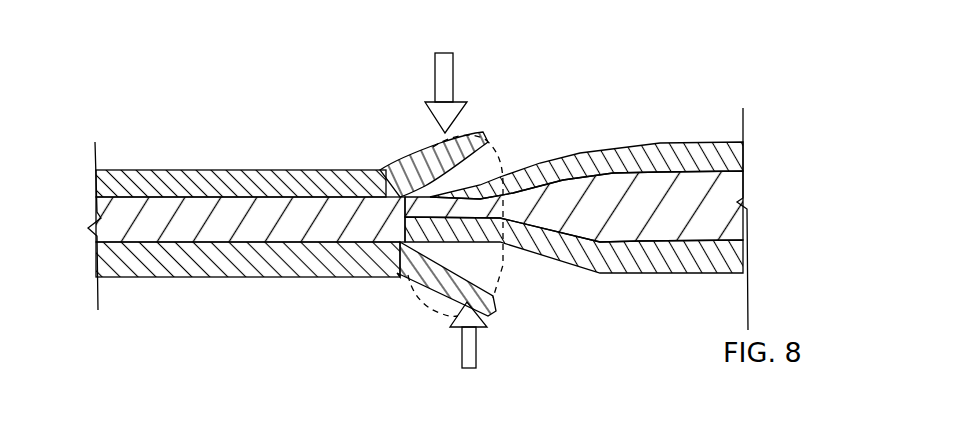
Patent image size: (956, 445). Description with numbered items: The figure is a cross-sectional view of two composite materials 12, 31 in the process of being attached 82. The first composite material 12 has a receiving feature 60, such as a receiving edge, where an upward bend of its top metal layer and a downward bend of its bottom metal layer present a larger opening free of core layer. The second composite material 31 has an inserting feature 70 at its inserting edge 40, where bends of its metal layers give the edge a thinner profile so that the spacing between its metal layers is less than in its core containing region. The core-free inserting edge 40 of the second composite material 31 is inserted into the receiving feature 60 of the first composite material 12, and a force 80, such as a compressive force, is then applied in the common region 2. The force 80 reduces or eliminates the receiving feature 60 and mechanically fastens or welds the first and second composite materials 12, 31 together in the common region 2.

The first composite material 12 is at (213, 179).
The inserting edge 40 is at (73, 226).
The inserting feature 70 is at (480, 185).
The receiving feature 60 is at (483, 263).
The second composite material 31 is at (613, 155).
The force 80 is at (437, 73).
The process of being attached 82 is at (566, 57).
The common region 2 is at (417, 293).